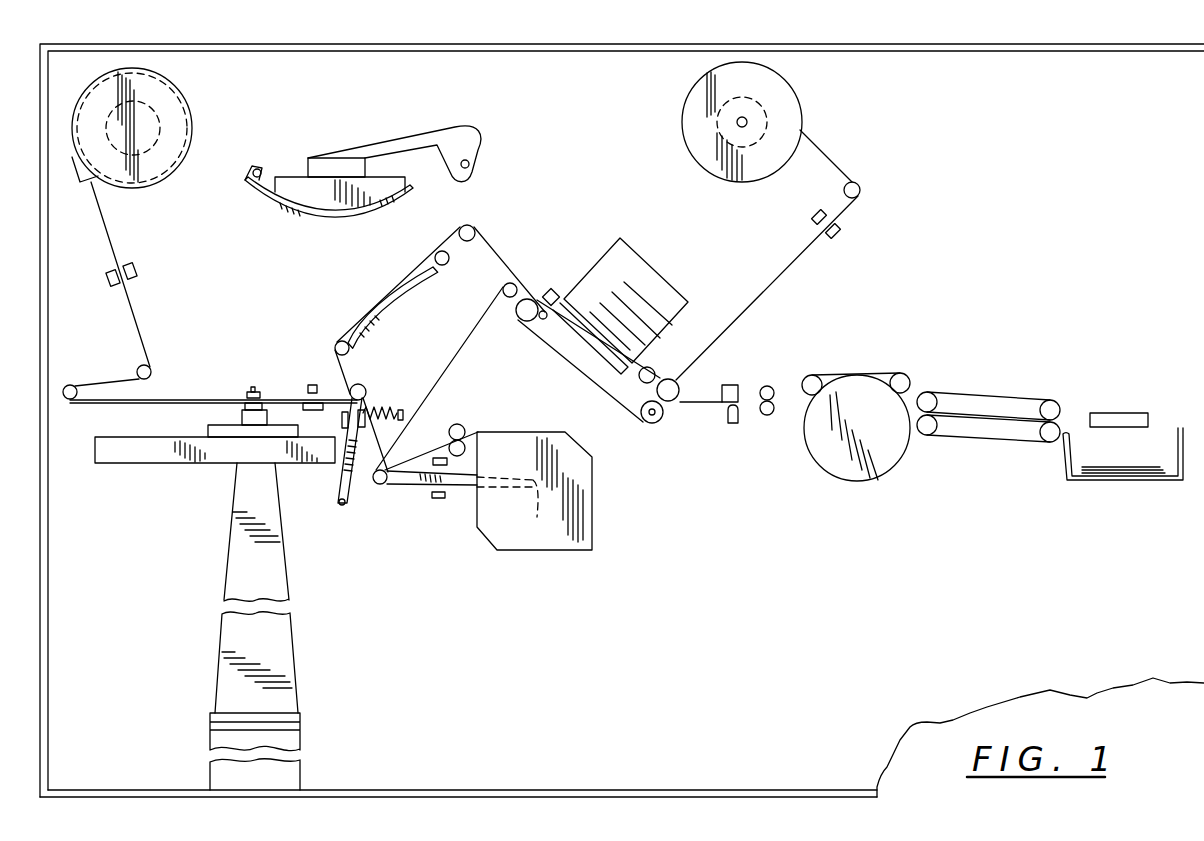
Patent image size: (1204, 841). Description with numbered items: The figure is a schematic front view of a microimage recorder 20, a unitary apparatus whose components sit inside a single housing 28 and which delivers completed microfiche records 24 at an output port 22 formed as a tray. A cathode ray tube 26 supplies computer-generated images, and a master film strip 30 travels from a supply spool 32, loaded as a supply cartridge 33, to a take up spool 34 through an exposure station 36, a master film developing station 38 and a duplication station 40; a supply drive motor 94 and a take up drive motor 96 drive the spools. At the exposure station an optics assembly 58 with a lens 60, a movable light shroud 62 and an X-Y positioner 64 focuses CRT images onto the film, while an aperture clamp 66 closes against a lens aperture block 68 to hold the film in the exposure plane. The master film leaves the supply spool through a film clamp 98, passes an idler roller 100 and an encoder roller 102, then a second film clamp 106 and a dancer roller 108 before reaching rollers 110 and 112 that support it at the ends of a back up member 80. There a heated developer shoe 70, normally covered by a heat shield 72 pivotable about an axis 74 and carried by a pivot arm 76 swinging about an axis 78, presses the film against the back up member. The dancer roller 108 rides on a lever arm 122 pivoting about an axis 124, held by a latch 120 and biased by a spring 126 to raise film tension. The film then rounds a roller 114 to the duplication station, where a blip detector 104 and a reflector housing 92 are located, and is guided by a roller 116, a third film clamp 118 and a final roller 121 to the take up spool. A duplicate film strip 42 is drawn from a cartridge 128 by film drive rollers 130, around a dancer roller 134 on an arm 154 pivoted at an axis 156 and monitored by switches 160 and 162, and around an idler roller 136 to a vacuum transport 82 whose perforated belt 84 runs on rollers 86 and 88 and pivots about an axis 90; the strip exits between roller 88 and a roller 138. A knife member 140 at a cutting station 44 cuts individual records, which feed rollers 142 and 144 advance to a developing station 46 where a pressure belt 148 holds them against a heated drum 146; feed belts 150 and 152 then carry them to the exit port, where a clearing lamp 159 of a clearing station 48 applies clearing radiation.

The microimage recorder 20 is at (880, 36).
The recorder output port 22 is at (1185, 468).
The microfiche records 24 is at (1068, 480).
The cathode ray tube 26 is at (292, 737).
The housing 28 is at (638, 788).
The master film strip 30 is at (131, 300).
The supply spool 32 is at (159, 129).
The supply cartridge 33 is at (122, 187).
The take up spool 34 is at (754, 122).
The exposure station 36 is at (227, 354).
The master film developing station 38 is at (441, 276).
The duplication station 40 is at (629, 279).
The duplicate film strip 42 is at (452, 365).
The cutting station 44 is at (780, 393).
The duplicate film developing station 46 is at (931, 402).
The clearing station 48 is at (1126, 381).
The optics assembly 58 is at (230, 531).
The lens 60 is at (243, 418).
The movable light shroud 62 is at (232, 578).
The X-Y positioner 64 is at (165, 455).
The aperture clamp 66 is at (248, 388).
The lens aperture block 68 is at (267, 403).
The developer shoe 70 is at (295, 185).
The heat shield 72 is at (363, 218).
The heat shield pivot axis 74 is at (257, 169).
The pivot arm 76 is at (402, 143).
The shoe pivot axis 78 is at (476, 162).
The back up member 80 is at (418, 300).
The vacuum transport 82 is at (543, 311).
The endless perforated belt 84 is at (587, 376).
The belt roller 86 is at (521, 318).
The belt roller 88 is at (639, 420).
The vacuum transport pivot axis 90 is at (657, 422).
The reflector housing 92 is at (657, 277).
The supply drive motor 94 is at (167, 165).
The take up drive motor 96 is at (717, 110).
The film clamp 98 is at (105, 268).
The idler roller 100 is at (140, 368).
The encoder roller 102 is at (70, 400).
The blip detector 104 is at (566, 283).
The second film clamp 106 is at (313, 383).
The dancer roller 108 is at (362, 386).
The roller 110 is at (349, 350).
The roller 112 is at (449, 260).
The roller 114 is at (474, 228).
The roller 116 is at (652, 368).
The third film clamp 118 is at (812, 212).
The latch 120 is at (368, 425).
The final roller 121 is at (862, 188).
The lever arm 122 is at (340, 480).
The lever arm pivot axis 124 is at (343, 505).
The spring 126 is at (375, 410).
The duplicate film cartridge 128 is at (578, 523).
The film drive rollers 130 is at (462, 427).
The duplicate film dancer roller 134 is at (393, 462).
The idler roller 136 is at (503, 288).
The roller 138 is at (675, 385).
The knife member 140 is at (733, 425).
The feed roller 142 is at (767, 386).
The feed roller 144 is at (767, 416).
The heated drum 146 is at (912, 452).
The pressure belt 148 is at (845, 372).
The feed belt 150 is at (982, 392).
The feed belt 152 is at (998, 442).
The arm 154 is at (463, 484).
The arm pivot axis 156 is at (530, 518).
The clearing lamp 159 is at (1128, 413).
The switch 160 is at (447, 462).
The switch 162 is at (455, 517).